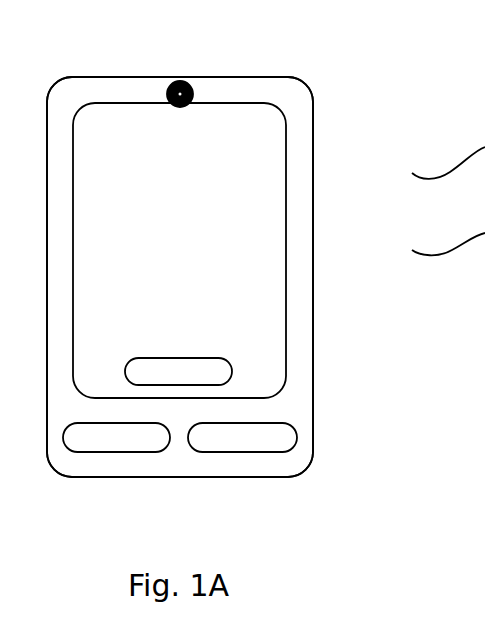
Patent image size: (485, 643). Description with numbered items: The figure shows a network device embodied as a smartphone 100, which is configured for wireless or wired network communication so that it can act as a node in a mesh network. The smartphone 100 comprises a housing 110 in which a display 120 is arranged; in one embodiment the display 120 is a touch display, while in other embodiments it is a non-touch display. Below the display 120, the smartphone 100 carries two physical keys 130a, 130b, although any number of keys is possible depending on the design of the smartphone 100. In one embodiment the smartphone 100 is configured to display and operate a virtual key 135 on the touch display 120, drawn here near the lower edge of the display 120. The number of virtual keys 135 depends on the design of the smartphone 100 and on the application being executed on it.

The smartphone 100 is at (67, 70).
The housing 110 is at (313, 185).
The display 120 is at (286, 250).
The virtual key 135 is at (232, 372).
The key 130a is at (115, 452).
The key 130b is at (297, 437).